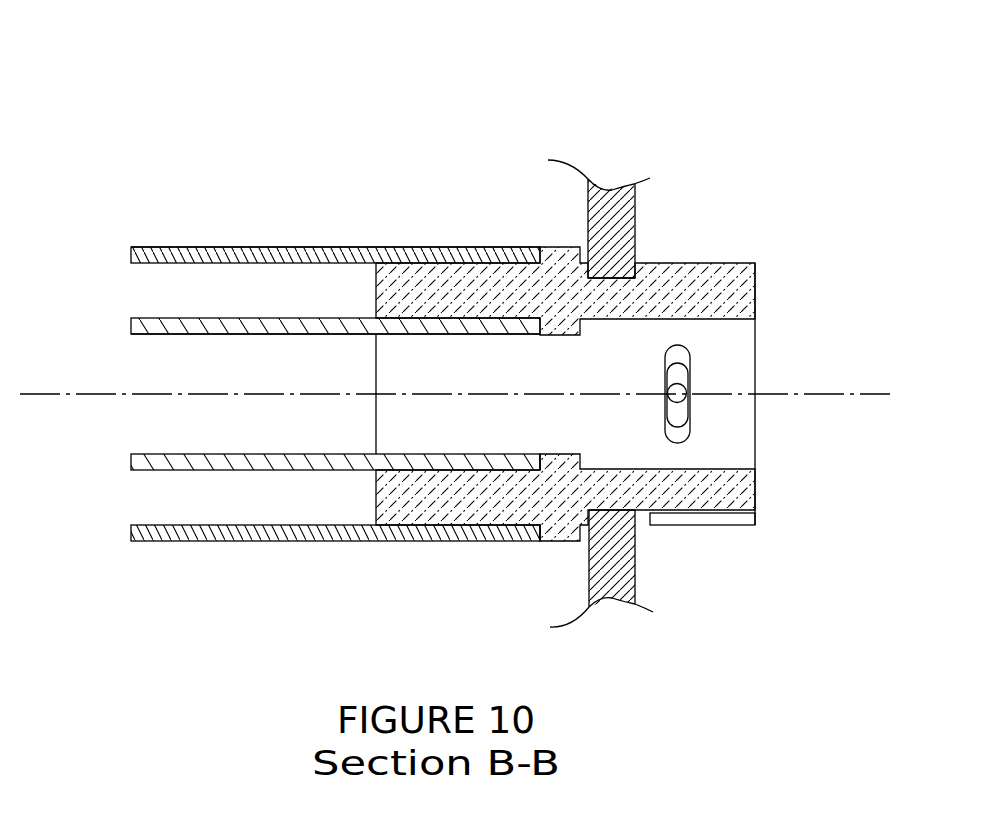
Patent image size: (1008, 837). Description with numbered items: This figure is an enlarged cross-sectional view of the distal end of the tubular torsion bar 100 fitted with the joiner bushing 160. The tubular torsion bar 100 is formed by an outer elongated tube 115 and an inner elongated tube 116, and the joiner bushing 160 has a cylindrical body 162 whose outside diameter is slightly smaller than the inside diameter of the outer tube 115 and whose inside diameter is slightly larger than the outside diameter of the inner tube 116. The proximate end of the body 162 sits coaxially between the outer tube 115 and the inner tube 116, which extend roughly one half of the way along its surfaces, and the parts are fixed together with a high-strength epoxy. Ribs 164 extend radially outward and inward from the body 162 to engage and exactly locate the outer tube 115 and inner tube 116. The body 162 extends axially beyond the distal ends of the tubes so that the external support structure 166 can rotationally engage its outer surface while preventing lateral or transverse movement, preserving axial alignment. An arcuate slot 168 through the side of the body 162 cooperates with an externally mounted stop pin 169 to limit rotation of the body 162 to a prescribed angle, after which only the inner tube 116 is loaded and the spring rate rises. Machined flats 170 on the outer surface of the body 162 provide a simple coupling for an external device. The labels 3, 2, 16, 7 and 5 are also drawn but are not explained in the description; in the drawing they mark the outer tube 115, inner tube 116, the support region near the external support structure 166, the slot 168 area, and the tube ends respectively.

The tubular torsion bar 100 is at (485, 47).
The outer tube 3 is at (197, 247).
The outer elongated tube 115 is at (220, 247).
The inner tube 2 is at (152, 318).
The inner elongated tube 116 is at (236, 334).
The ribs 164 is at (452, 247).
The cylindrical body 162 is at (728, 263).
The joiner bushing 160 is at (710, 582).
The arcuate slot 168 is at (672, 355).
The flange collar 16 is at (600, 215).
The external support structure 166 is at (610, 572).
The machined flats 170 is at (743, 518).
The slot 7 is at (675, 412).
The stop pin 169 is at (677, 393).
The tube end 5 is at (538, 454).